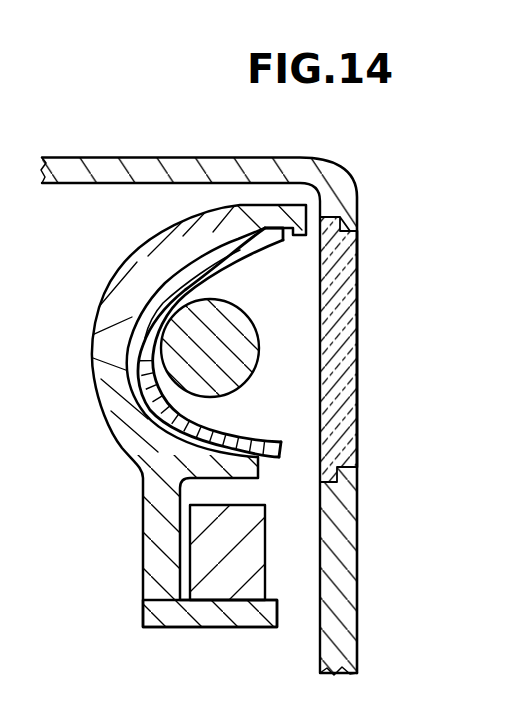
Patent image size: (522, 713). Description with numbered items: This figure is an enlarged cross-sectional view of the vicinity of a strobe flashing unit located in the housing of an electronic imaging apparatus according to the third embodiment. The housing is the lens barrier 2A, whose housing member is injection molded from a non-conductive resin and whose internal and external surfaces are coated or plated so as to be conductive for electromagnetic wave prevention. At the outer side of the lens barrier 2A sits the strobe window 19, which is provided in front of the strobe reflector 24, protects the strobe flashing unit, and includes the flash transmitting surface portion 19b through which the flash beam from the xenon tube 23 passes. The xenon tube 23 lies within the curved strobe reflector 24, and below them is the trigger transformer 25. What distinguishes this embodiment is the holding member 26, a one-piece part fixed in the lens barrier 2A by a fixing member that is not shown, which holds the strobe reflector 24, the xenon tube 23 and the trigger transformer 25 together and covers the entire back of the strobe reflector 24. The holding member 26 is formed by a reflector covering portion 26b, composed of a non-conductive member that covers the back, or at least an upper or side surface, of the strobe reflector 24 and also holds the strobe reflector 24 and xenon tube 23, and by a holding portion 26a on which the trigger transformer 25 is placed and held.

The lens barrier 2A is at (306, 172).
The strobe window 19 is at (372, 255).
The flash transmitting surface portion 19b is at (357, 290).
The xenon tube 23 is at (260, 349).
The strobe reflector 24 is at (285, 446).
The trigger transformer 25 is at (252, 560).
The holding member 26 is at (248, 631).
The holding portion 26a is at (175, 618).
The reflector covering portion 26b is at (214, 226).